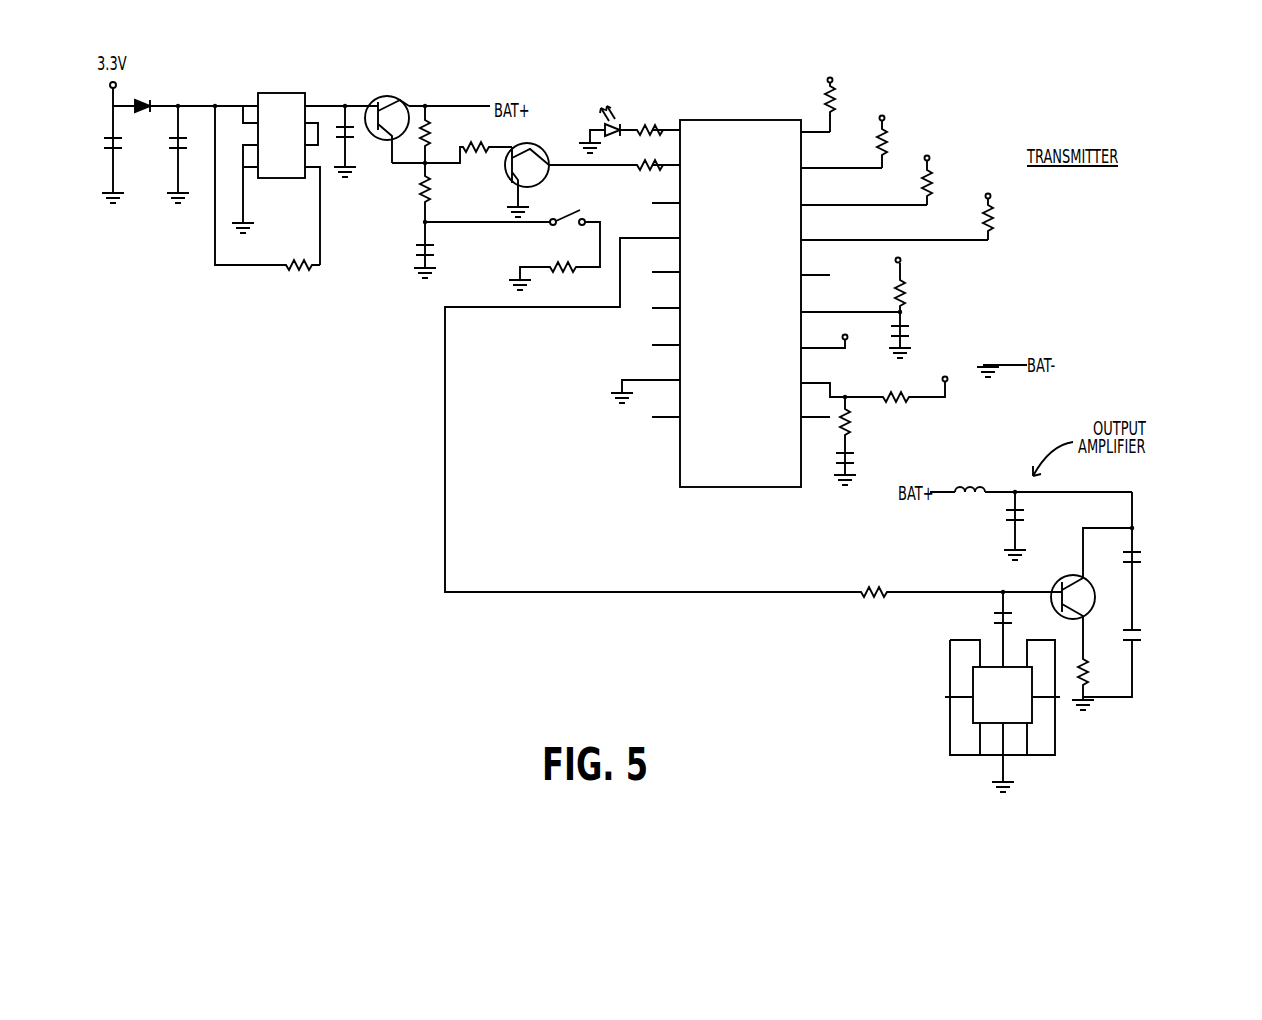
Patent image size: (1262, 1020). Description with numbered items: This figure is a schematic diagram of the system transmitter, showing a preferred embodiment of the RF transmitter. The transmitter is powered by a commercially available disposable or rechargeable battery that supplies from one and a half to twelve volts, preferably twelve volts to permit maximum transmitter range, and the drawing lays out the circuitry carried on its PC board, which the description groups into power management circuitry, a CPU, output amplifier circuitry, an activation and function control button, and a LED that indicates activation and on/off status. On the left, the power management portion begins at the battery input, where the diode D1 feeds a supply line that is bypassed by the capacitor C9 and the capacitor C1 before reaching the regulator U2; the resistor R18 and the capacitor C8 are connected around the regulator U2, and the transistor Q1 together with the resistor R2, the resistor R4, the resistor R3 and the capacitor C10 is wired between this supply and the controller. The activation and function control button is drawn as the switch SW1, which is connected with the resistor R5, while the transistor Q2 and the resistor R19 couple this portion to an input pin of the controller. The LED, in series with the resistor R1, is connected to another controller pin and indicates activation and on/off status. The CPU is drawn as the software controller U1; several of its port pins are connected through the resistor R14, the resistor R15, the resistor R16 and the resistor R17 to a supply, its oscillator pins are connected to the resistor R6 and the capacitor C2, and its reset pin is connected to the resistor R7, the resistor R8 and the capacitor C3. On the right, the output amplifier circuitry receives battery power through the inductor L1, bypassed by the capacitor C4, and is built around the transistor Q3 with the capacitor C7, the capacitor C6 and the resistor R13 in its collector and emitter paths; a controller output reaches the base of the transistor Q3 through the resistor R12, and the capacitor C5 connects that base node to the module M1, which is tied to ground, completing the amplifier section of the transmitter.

The diode BAS70 D1 is at (167, 95).
The capacitor 100uF/10 C9 is at (128, 148).
The capacitor 104 C1 is at (190, 153).
The voltage regulator MIC2951 5V U2 is at (266, 165).
The resistor 330K R18 is at (267, 202).
The capacitor 104 C8 is at (350, 140).
The transistor A733 Q1 is at (387, 109).
The resistor 47K R2 is at (441, 137).
The resistor 100K R4 is at (452, 149).
The resistor 270K R3 is at (445, 207).
The capacitor 105 C10 is at (441, 249).
The switch SW1 is at (511, 208).
The resistor 100K R5 is at (554, 260).
The transistor 945 Q2 is at (543, 170).
The resistor 100K to PA2 R19 is at (614, 172).
The element LED is at (606, 117).
The resistor 3.3K R1 is at (656, 108).
The software controller U1 is at (799, 303).
The resistor 1K R14 is at (819, 94).
The resistor 1K R15 is at (871, 137).
The resistor 1K R16 is at (922, 175).
The resistor 1K R17 is at (979, 208).
The resistor 56K R6 is at (936, 279).
The capacitor 470P C2 is at (930, 334).
The resistor 100K R7 is at (902, 385).
The resistor 10K R8 is at (861, 422).
The capacitor 104 C3 is at (833, 460).
The inductor 1uH L1 is at (1031, 495).
The capacitor 102 C4 is at (1032, 525).
The transistor H10 Q3 is at (1085, 573).
The capacitor 2PF/NPO C7 is at (1161, 579).
The capacitor 12PF/NPO C6 is at (1145, 660).
The resistor 100 R13 is at (1097, 679).
The resistor 270K R12 is at (748, 432).
The capacitor 12PF/NPO C5 is at (965, 628).
The module M1 is at (1002, 716).